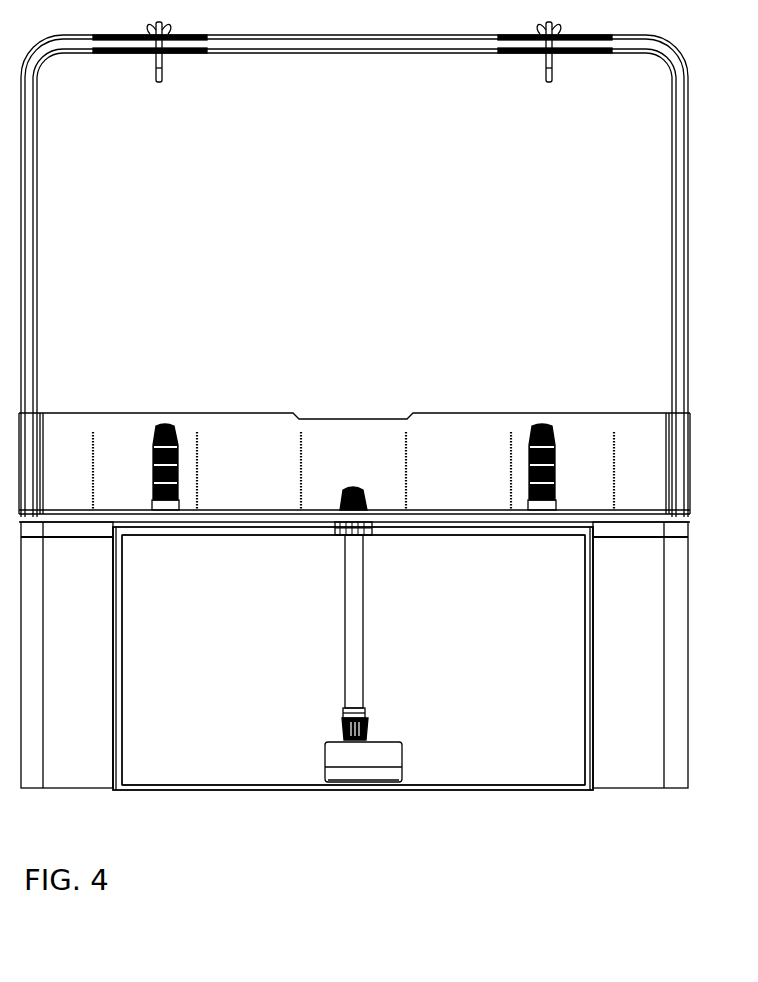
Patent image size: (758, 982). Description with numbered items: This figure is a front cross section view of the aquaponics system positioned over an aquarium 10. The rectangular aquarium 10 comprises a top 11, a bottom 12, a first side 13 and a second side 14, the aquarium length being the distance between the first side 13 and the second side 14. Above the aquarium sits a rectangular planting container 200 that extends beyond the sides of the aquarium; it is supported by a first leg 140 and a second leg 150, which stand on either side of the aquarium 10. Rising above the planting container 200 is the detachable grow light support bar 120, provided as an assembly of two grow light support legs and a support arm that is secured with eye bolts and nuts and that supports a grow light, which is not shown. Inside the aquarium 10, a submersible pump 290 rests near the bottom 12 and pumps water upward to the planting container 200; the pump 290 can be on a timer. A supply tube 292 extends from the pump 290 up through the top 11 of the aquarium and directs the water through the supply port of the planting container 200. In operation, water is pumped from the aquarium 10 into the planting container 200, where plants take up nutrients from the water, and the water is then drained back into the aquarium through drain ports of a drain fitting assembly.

The aquarium 10 is at (245, 742).
The top 11 is at (227, 530).
The bottom 12 is at (143, 777).
The first side 13 is at (573, 644).
The second side 14 is at (130, 644).
The detachable grow light support bar 120 is at (602, 70).
The first leg 140 is at (640, 655).
The second leg 150 is at (67, 655).
The planting container 200 is at (70, 422).
The submersible pump 290 is at (392, 762).
The supply tube 292 is at (375, 631).